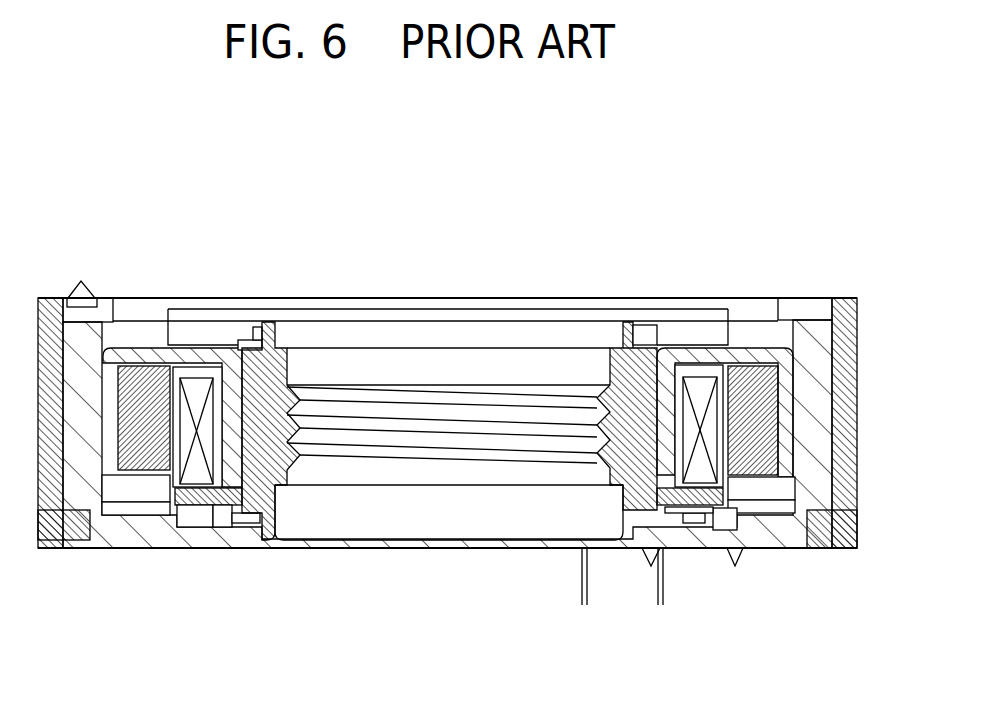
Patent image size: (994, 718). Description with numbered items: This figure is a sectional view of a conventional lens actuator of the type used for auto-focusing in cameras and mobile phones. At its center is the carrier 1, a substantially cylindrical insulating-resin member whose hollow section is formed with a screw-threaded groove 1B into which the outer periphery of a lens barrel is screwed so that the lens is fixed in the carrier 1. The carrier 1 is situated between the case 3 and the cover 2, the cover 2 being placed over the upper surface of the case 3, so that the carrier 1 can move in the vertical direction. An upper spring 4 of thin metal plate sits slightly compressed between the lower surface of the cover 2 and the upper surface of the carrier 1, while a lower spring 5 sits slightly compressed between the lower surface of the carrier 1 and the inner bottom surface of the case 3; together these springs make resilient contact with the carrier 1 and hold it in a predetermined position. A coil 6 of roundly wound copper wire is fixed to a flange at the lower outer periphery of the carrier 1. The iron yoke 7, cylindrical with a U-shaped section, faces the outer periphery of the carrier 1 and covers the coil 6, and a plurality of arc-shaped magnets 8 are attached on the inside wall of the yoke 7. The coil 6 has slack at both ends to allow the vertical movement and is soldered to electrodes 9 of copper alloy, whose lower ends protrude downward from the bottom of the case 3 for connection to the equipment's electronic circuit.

The carrier 1 is at (628, 410).
The screw-threaded groove 1B is at (392, 408).
The cover 2 is at (845, 302).
The case 3 is at (787, 537).
The upper spring 4 is at (257, 333).
The lower spring 5 is at (240, 517).
The coil 6 is at (710, 430).
The yoke 7 is at (788, 370).
The magnets 8 is at (757, 405).
The electrodes 9 is at (587, 605).